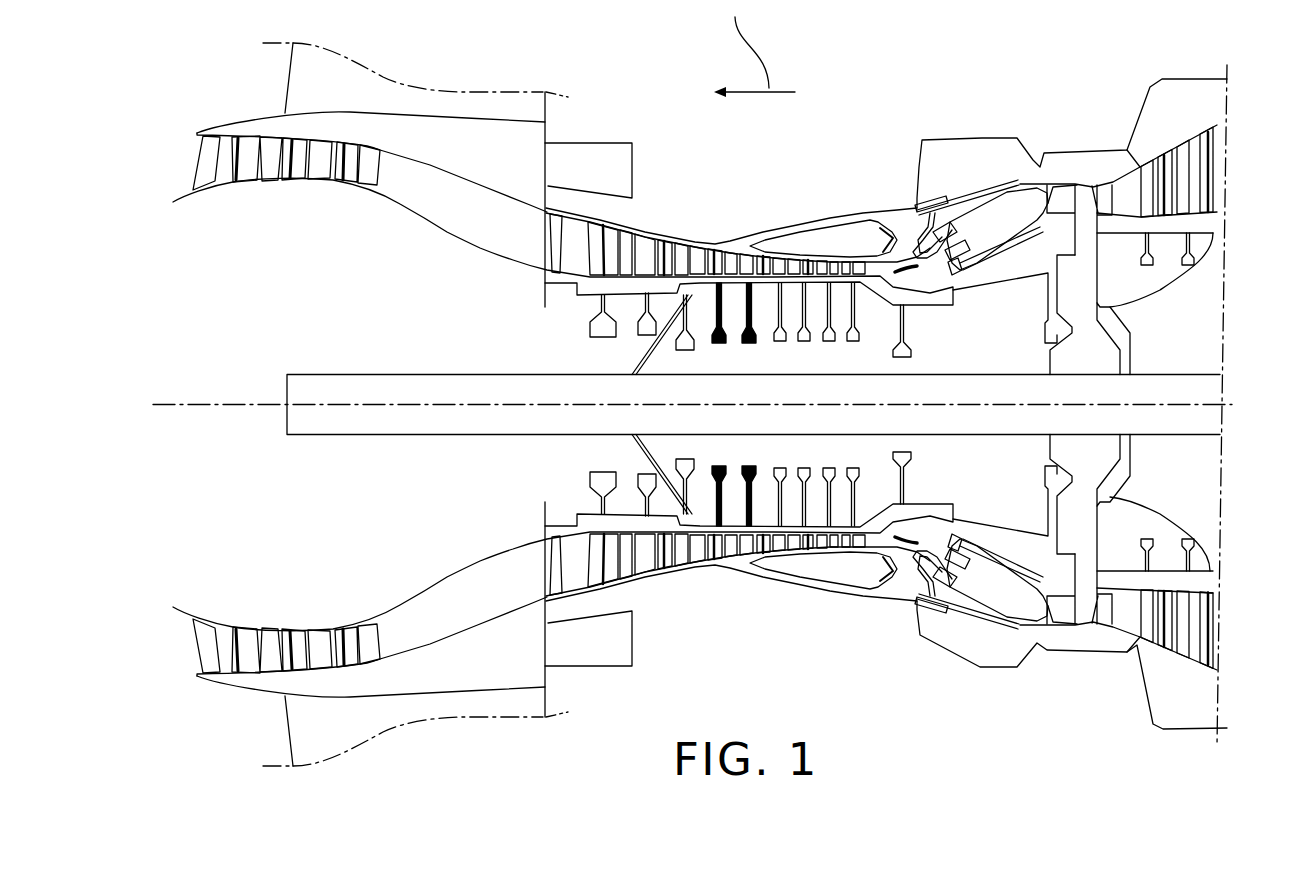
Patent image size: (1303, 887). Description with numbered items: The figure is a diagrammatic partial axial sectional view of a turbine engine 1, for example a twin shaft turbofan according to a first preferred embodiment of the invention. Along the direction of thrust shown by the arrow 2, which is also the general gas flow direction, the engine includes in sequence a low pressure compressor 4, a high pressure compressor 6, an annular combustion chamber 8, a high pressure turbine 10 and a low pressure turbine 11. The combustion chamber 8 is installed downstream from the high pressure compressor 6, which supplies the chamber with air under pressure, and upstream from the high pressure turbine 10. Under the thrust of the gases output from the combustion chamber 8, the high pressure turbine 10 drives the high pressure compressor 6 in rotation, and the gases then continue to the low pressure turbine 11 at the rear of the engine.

The turbine engine 1 is at (912, 131).
The arrow 2 is at (754, 48).
The low pressure compressor 4 is at (297, 182).
The high pressure compressor 6 is at (767, 283).
The annular combustion chamber 8 is at (999, 237).
The high pressure turbine 10 is at (1068, 191).
The low pressure turbine 11 is at (1136, 191).